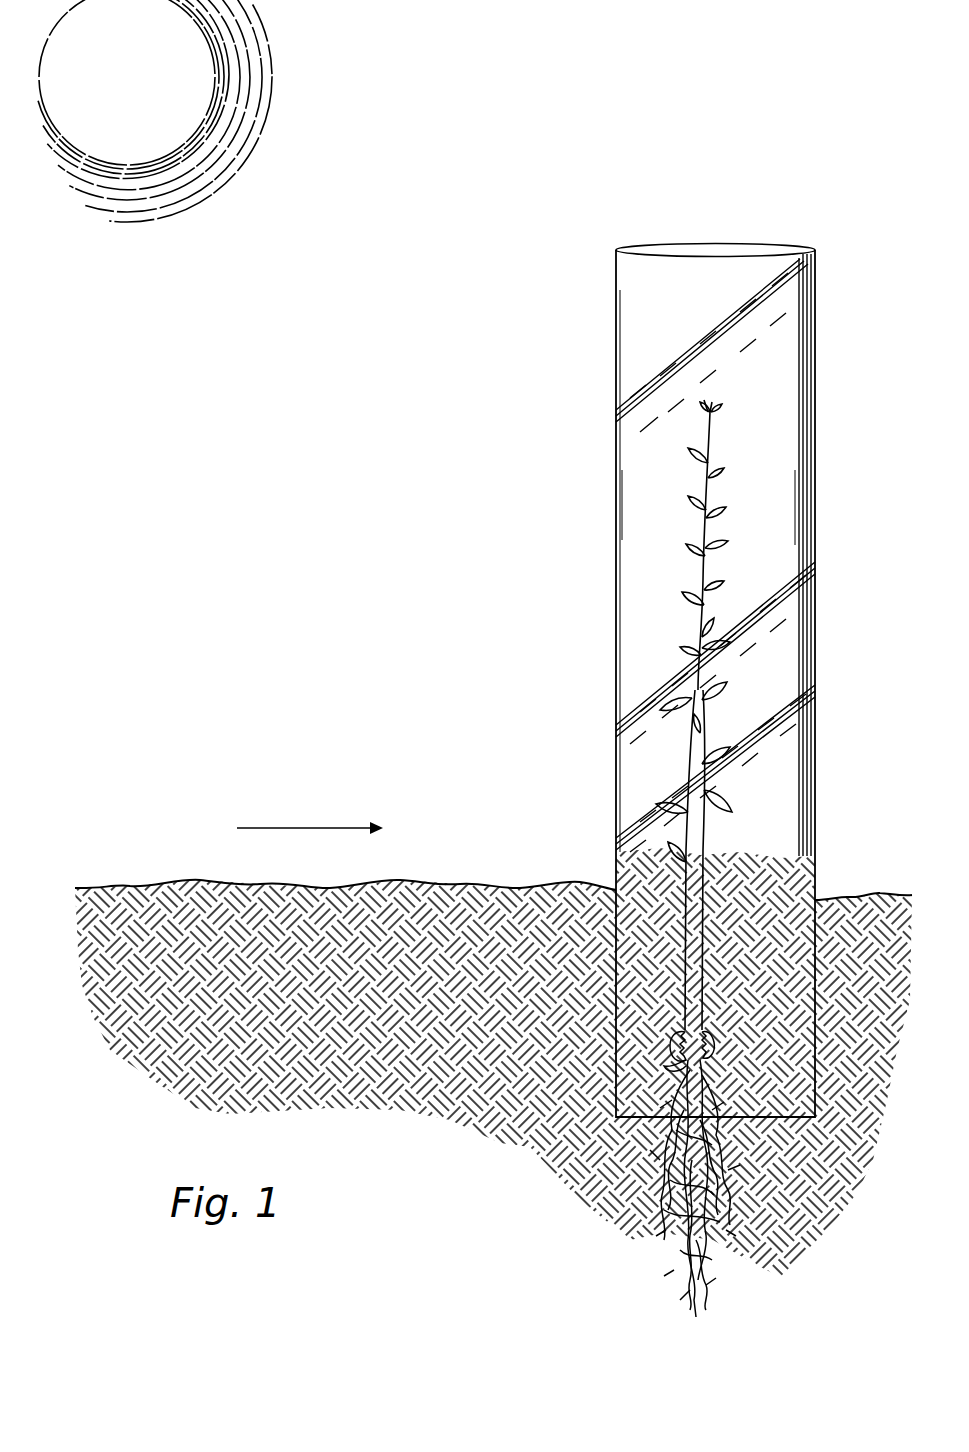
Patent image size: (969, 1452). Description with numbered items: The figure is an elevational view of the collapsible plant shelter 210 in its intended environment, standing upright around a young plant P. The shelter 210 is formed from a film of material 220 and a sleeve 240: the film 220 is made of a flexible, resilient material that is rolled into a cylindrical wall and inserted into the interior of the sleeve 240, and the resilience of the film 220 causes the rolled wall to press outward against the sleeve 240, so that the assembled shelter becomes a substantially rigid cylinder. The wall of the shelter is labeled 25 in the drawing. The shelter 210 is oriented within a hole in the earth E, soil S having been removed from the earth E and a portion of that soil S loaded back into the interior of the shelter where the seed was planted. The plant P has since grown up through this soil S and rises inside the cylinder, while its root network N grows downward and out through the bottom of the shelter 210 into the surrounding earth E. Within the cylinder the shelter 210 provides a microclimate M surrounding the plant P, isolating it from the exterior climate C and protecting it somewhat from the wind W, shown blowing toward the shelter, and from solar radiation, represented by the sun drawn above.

The collapsible plant shelter 210 is at (710, 623).
The film of material 220 is at (707, 250).
The sleeve 240 is at (806, 284).
The tube wall 25 is at (613, 287).
The microclimate M is at (760, 378).
The soil S is at (782, 1005).
The earth E is at (250, 1097).
The plant P is at (682, 762).
The root network N is at (589, 1199).
The exterior climate C is at (166, 792).
The wind W is at (304, 828).